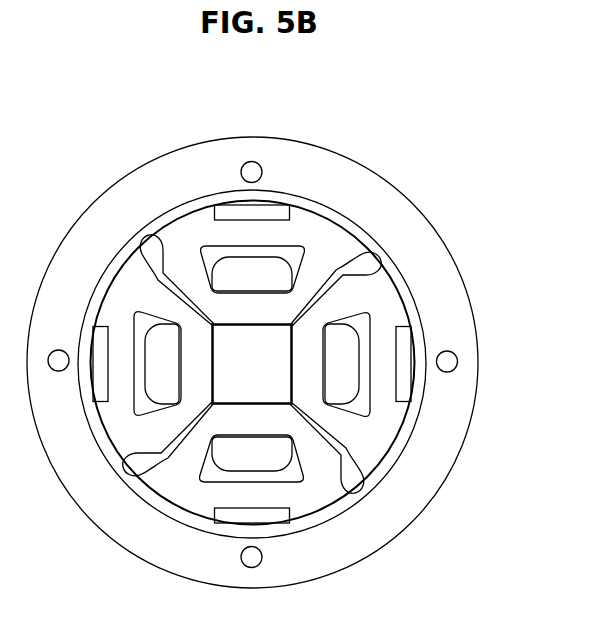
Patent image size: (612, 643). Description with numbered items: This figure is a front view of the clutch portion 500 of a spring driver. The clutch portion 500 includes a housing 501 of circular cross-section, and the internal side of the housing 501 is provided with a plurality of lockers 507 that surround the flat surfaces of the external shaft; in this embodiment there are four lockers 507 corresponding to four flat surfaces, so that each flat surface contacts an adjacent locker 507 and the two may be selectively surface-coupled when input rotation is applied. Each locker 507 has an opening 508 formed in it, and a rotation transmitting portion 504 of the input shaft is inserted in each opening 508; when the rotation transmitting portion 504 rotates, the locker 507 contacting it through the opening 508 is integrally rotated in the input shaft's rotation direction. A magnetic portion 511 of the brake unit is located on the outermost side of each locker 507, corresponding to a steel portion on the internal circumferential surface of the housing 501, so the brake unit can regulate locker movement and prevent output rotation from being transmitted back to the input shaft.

The clutch portion 500 is at (218, 108).
The housing 501 is at (295, 165).
The rotation transmitting portion 504 is at (230, 271).
The locker 507 is at (310, 223).
The opening 508 is at (330, 240).
The magnetic portion 511 is at (272, 515).